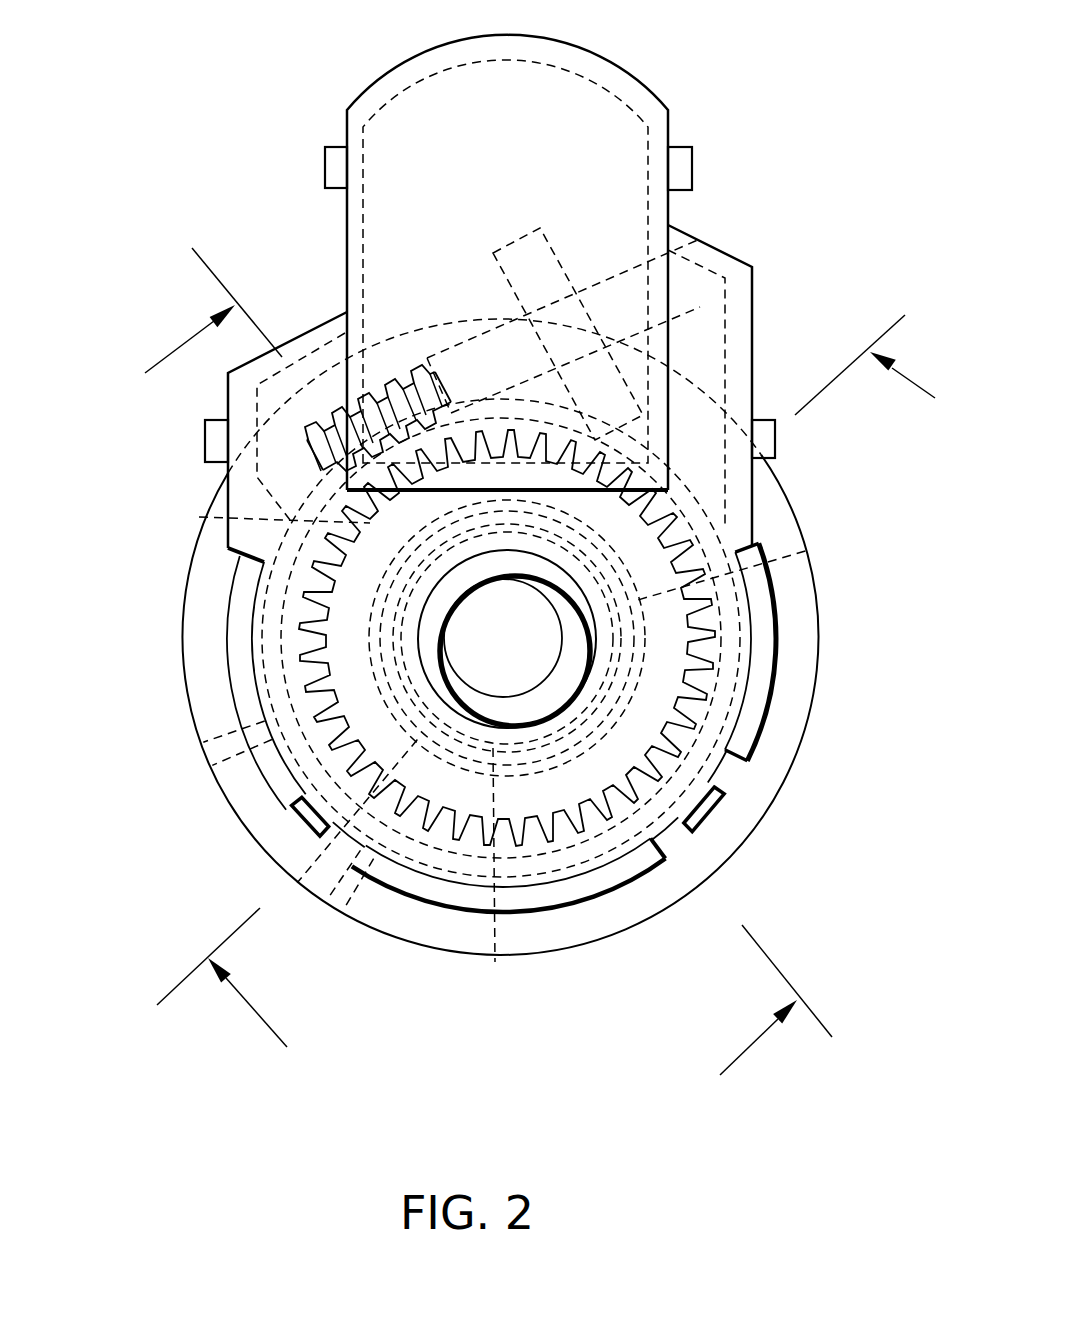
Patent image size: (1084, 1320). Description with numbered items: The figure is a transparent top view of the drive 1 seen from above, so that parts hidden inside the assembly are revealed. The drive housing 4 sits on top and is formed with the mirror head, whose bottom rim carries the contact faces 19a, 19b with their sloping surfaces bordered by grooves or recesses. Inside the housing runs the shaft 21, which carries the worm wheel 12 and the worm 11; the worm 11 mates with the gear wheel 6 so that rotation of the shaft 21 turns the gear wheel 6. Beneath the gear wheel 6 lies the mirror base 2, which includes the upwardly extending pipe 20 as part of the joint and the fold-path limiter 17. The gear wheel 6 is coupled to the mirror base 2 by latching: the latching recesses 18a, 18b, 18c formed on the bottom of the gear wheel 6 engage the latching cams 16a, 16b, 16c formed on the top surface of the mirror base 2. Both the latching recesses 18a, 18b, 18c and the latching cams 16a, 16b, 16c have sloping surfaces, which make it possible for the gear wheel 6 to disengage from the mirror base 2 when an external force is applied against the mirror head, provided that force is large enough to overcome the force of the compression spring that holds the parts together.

The drive 1 is at (302, 94).
The mirror base 2 is at (733, 847).
The drive housing 4 is at (599, 56).
The gear wheel 6 is at (700, 730).
The worm 11 is at (410, 355).
The worm wheel 12 is at (558, 240).
The fold-path limiter 17 is at (576, 564).
The pipe 20 is at (532, 697).
The shaft 21 is at (476, 346).
The contact face 19a is at (210, 692).
The contact face 19b is at (803, 630).
The latching recess 18a is at (544, 869).
The latching cam 16a is at (544, 869).
The latching recess 18b is at (773, 566).
The latching cam 16b is at (773, 566).
The latching recess 18c is at (233, 517).
The latching cam 16c is at (233, 517).